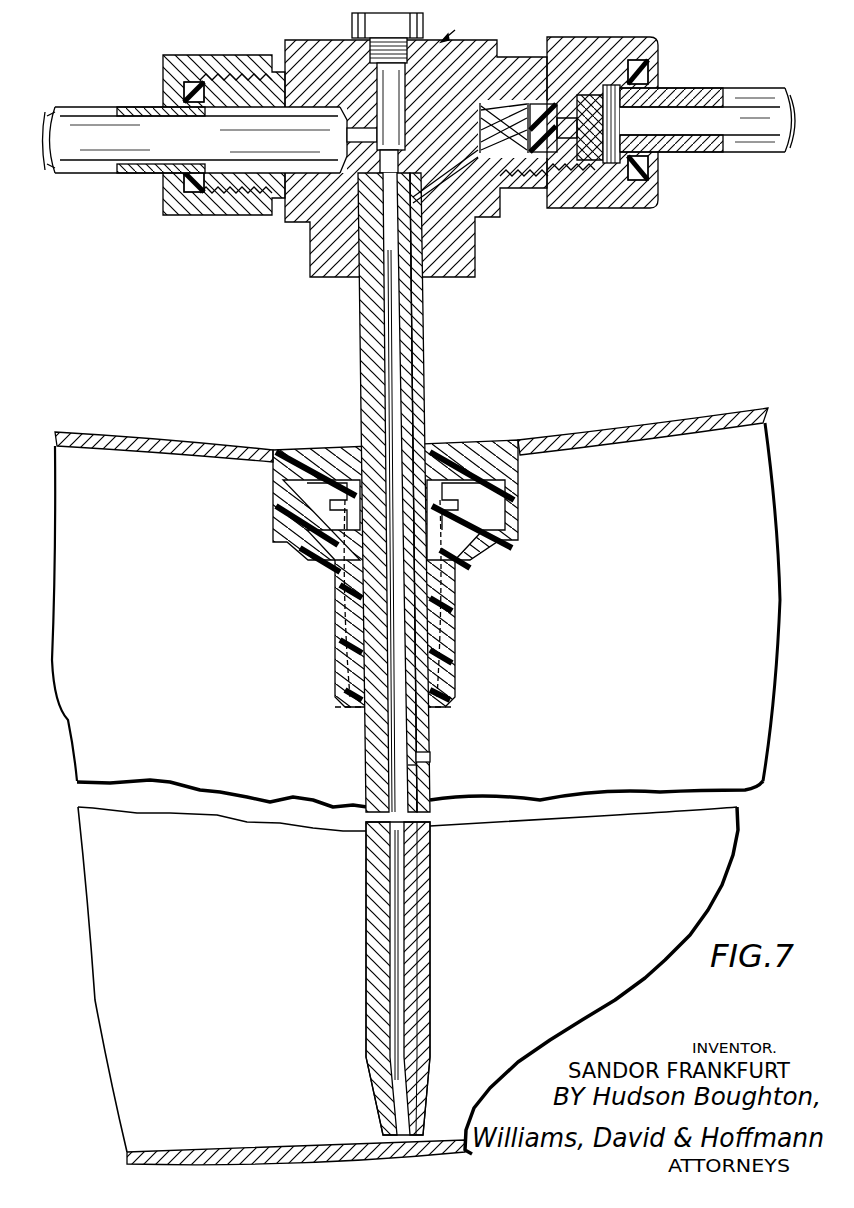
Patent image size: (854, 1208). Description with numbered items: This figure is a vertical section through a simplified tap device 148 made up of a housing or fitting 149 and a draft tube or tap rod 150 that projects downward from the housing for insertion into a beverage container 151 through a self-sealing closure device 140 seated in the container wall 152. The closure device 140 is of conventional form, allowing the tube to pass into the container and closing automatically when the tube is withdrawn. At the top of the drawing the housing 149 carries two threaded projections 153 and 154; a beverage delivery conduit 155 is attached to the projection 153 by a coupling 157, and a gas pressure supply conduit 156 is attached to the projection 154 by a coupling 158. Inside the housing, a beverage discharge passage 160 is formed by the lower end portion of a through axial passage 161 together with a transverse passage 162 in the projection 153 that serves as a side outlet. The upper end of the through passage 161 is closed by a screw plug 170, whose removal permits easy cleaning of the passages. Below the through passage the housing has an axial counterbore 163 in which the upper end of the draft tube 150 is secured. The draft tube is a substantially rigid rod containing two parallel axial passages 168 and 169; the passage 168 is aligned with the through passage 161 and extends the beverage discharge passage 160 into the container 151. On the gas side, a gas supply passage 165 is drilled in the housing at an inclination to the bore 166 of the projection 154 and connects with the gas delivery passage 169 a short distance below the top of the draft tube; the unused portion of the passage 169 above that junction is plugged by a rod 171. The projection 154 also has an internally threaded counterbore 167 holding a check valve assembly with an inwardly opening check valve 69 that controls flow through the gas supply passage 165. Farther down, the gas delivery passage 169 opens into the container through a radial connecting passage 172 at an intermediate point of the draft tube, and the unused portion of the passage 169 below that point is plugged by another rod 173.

The self-sealing closure device 140 is at (455, 622).
The tap device 148 is at (530, 27).
The housing 149 is at (457, 22).
The draft tube 150 is at (360, 357).
The beverage container 151 is at (88, 437).
The container wall 152 is at (188, 446).
The threaded projection 153 is at (248, 60).
The threaded projection 154 is at (590, 38).
The beverage delivery conduit 155 is at (97, 92).
The gas pressure supply conduit 156 is at (773, 74).
The coupling 157 is at (186, 58).
The coupling 158 is at (628, 38).
The beverage discharge passage 160 is at (402, 158).
The through axial passage 161 is at (400, 103).
The transverse passage 162 is at (358, 120).
The axial counterbore 163 is at (350, 265).
The gas supply passage 165 is at (443, 196).
The bore 166 is at (500, 108).
The internally threaded counterbore 167 is at (578, 208).
The axial passage 168 is at (386, 398).
The gas delivery passage 169 is at (410, 410).
The screw plug 170 is at (352, 24).
The rod 171 is at (414, 188).
The radial connecting passage 172 is at (433, 758).
The rod 173 is at (433, 782).
The check valve 69 is at (510, 190).